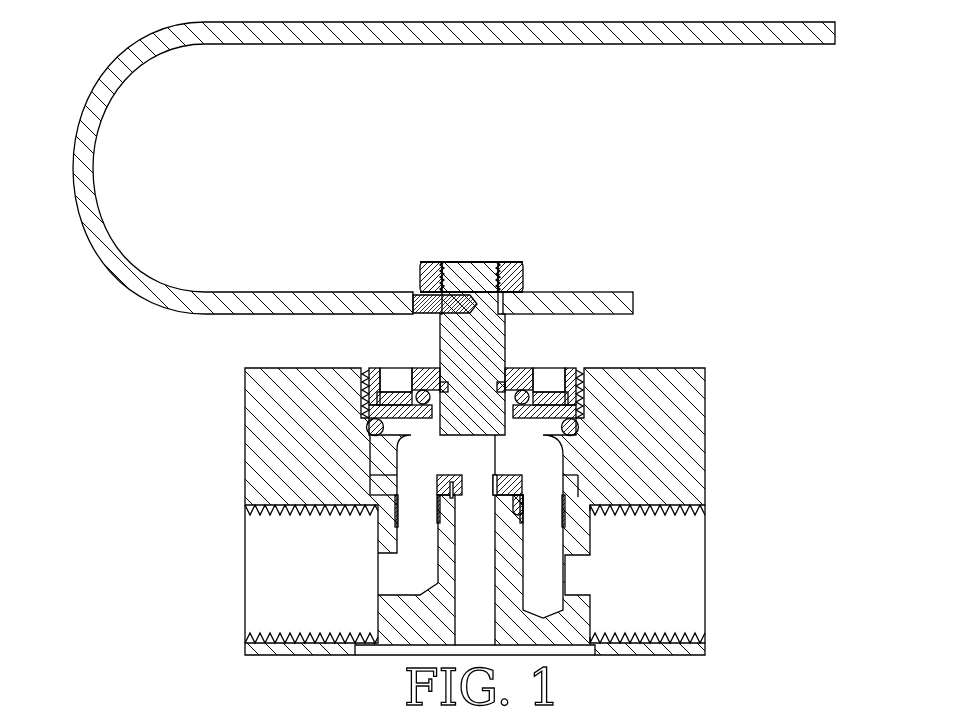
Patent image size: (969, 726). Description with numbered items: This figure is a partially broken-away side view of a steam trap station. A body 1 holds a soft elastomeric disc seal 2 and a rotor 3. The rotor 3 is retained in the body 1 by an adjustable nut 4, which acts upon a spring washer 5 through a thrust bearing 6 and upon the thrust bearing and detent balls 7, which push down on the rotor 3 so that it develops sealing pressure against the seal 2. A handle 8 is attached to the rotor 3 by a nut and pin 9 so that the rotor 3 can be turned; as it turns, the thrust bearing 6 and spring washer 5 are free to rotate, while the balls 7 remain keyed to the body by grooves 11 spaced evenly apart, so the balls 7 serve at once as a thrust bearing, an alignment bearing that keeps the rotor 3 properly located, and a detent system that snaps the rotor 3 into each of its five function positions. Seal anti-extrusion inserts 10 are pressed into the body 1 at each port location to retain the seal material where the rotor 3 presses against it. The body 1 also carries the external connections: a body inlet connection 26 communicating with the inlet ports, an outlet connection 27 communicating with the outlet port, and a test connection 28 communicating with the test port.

The body 1 is at (635, 375).
The disc seal 2 is at (515, 498).
The rotor 3 is at (393, 457).
The adjustable nut 4 is at (523, 370).
The spring washer 5 is at (388, 393).
The thrust bearing 6 is at (427, 392).
The thrust bearing and detent balls 7 is at (363, 408).
The handle 8 is at (263, 292).
The nut and pin 9 is at (418, 290).
The seal anti-extrusion inserts 10 is at (565, 512).
The grooves 11 is at (368, 450).
The body inlet connection 26 is at (265, 580).
The outlet connection 27 is at (692, 583).
The test connection 28 is at (421, 685).